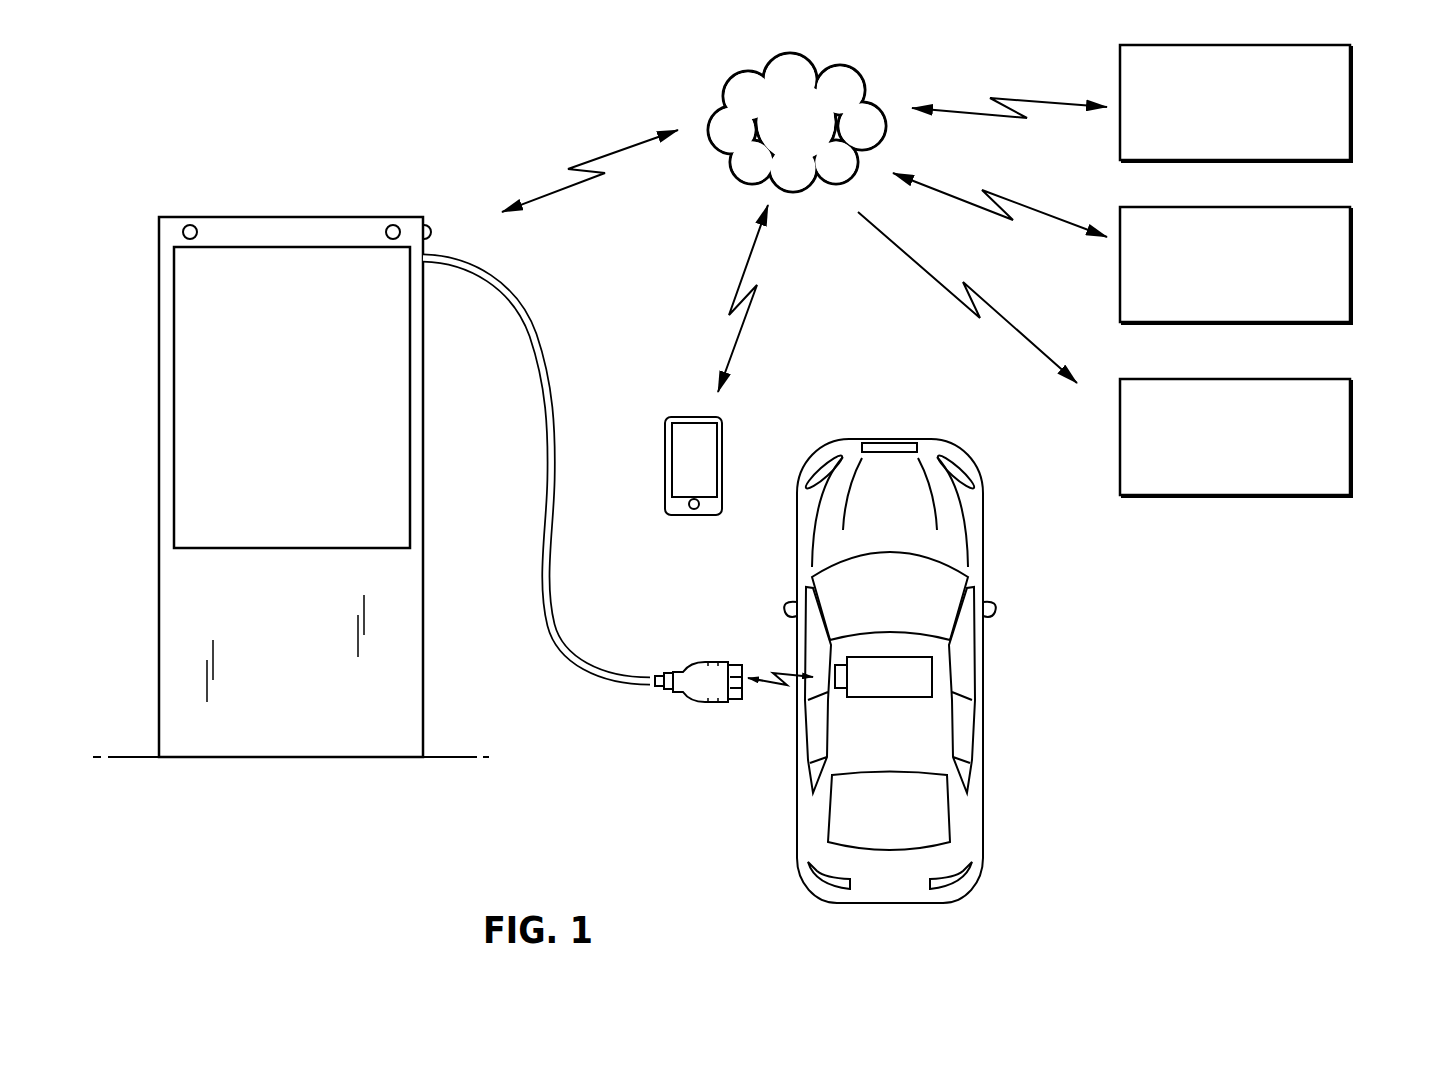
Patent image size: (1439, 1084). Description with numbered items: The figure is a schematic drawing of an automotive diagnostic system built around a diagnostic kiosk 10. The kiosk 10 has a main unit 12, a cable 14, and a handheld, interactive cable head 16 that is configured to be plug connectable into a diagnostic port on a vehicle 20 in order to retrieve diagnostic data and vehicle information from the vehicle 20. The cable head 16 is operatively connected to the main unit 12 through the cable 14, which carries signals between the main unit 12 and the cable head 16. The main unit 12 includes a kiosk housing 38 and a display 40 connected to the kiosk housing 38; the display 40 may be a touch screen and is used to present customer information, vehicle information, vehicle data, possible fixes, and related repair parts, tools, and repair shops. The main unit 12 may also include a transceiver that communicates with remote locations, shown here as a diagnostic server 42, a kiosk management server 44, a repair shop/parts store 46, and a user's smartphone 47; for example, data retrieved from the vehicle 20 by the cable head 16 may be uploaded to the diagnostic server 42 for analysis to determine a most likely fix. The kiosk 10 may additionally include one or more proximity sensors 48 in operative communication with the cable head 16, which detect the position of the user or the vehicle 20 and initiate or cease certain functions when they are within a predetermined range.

The automotive diagnostic kiosk 10 is at (178, 143).
The main unit 12 is at (158, 521).
The cable 14 is at (569, 656).
The interactive cable head 16 is at (710, 710).
The vehicle 20 is at (973, 898).
The kiosk housing 38 is at (159, 680).
The display 40 is at (188, 470).
The diagnostic server 42 is at (1350, 92).
The kiosk management server 44 is at (1350, 256).
The repair shop/parts store 46 is at (1350, 430).
The user's smartphone 47 is at (665, 452).
The proximity sensor 48 is at (433, 225).